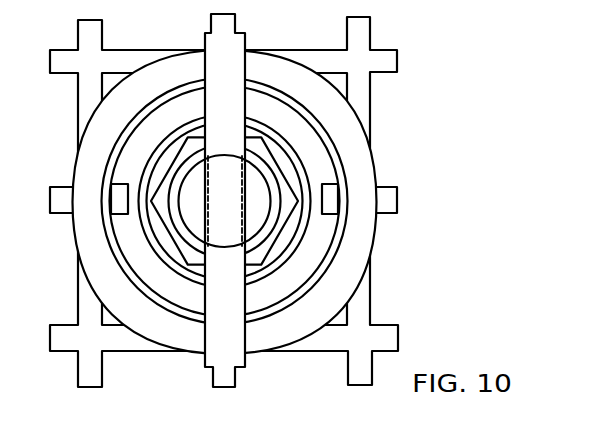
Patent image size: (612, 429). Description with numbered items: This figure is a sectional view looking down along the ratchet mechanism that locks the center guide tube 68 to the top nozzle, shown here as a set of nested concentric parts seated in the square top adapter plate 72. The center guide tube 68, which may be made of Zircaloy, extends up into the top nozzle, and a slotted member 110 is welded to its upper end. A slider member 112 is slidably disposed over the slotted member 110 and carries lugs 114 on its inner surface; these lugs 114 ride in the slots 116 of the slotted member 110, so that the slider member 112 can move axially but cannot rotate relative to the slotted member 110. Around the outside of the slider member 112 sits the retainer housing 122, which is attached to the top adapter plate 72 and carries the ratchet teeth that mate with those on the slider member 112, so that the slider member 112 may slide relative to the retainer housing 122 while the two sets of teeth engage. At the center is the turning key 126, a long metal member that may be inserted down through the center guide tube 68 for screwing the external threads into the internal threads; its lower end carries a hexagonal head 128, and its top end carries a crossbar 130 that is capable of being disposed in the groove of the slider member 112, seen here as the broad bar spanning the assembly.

The center guide tube 68 is at (282, 263).
The top adapter plate 72 is at (397, 65).
The slotted member 110 is at (282, 117).
The slider member 112 is at (325, 263).
The lugs 114 is at (334, 211).
The slots 116 is at (330, 143).
The retainer housing 122 is at (367, 163).
The turning key 126 is at (238, 186).
The hexagonal head 128 is at (258, 135).
The crossbar 130 is at (247, 44).